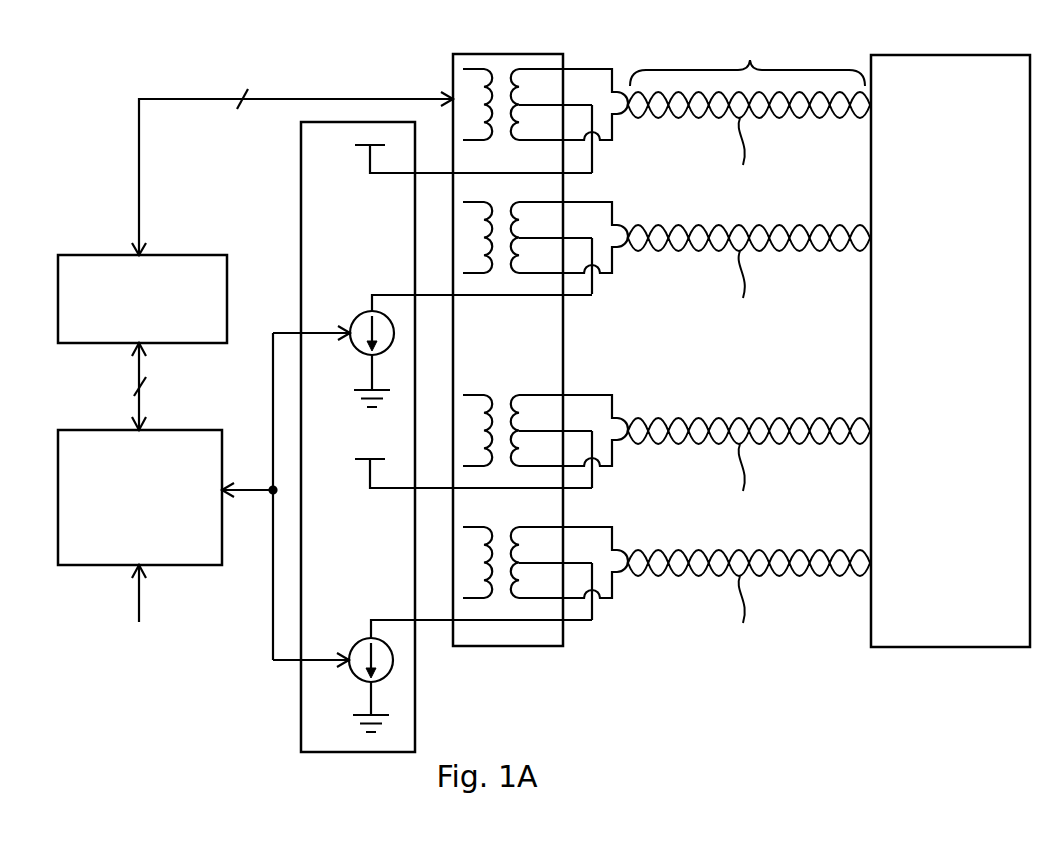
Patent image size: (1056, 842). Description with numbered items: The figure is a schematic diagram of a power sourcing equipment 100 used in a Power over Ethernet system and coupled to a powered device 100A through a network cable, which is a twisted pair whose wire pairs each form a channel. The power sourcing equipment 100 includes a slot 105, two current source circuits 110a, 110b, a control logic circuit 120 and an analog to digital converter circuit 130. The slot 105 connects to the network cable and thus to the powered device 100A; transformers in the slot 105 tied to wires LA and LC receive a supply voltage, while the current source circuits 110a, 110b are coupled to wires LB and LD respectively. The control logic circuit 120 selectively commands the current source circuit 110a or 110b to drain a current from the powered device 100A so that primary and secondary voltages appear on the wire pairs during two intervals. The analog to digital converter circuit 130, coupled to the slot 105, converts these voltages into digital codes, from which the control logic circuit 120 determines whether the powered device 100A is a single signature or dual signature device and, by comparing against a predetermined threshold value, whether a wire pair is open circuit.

The power sourcing equipment 100 is at (600, 50).
The slot 105 is at (563, 357).
The current source circuit 110a is at (358, 316).
The current source circuit 110b is at (358, 644).
The control logic circuit 120 is at (126, 531).
The analog to digital converter circuit 130 is at (129, 321).
The powered device 100A is at (929, 373).